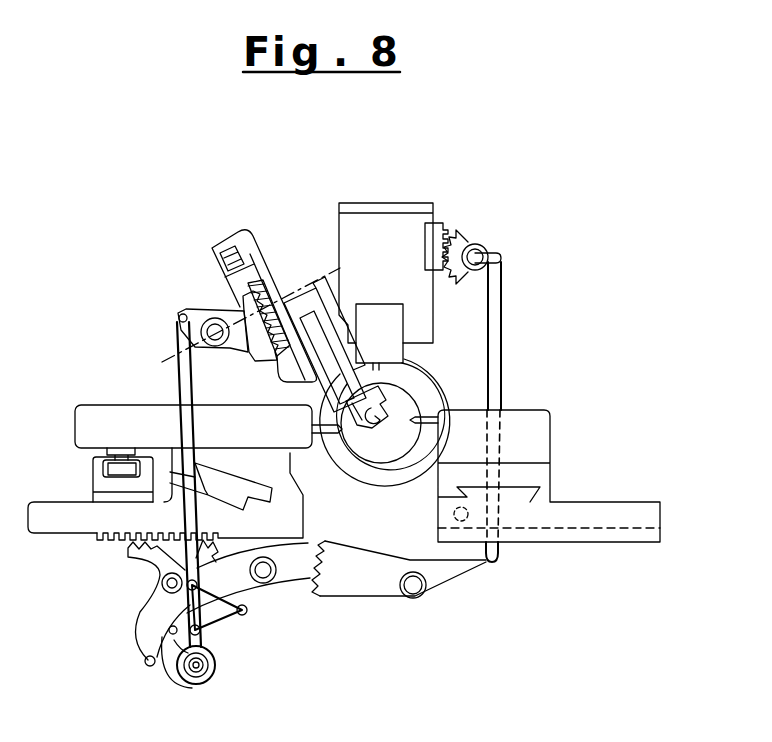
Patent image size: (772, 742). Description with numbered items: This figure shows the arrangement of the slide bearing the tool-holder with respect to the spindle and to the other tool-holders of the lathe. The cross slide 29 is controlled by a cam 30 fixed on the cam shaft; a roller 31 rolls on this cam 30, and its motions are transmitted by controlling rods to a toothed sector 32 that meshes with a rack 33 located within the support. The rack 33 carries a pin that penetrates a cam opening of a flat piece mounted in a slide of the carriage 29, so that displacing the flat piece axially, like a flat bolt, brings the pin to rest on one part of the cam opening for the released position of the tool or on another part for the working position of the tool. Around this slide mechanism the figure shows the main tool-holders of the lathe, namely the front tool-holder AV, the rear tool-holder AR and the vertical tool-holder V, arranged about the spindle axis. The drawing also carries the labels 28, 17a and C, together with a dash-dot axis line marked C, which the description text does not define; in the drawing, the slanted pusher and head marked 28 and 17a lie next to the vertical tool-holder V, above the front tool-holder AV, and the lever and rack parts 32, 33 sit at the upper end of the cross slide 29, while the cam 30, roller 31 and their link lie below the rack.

The cross slide 29 is at (267, 276).
The rack 33 is at (243, 293).
The toothed sector 32 is at (250, 341).
The plunger 28 is at (342, 367).
The plunger head 17a is at (382, 427).
The roller 31 is at (201, 628).
The cam 30 is at (203, 647).
The vertical tool-holder V is at (405, 227).
The front tool-holder AV is at (107, 432).
The rear tool-holder AR is at (531, 444).
The axis C- C is at (238, 311).